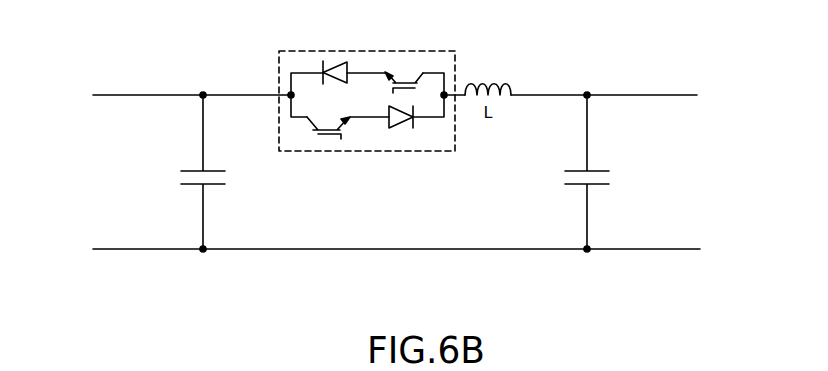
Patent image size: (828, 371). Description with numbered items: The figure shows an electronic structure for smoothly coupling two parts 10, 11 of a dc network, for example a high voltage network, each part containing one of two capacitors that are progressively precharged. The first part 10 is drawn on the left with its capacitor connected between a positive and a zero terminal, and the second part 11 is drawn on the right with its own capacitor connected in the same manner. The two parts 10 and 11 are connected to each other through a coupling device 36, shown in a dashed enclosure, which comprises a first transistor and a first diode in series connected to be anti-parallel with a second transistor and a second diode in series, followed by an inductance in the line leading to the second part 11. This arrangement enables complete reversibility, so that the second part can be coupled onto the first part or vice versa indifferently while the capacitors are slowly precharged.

The coupling device 36 is at (350, 51).
The first part of the dc network 10 is at (237, 270).
The second part of the dc network 11 is at (555, 270).